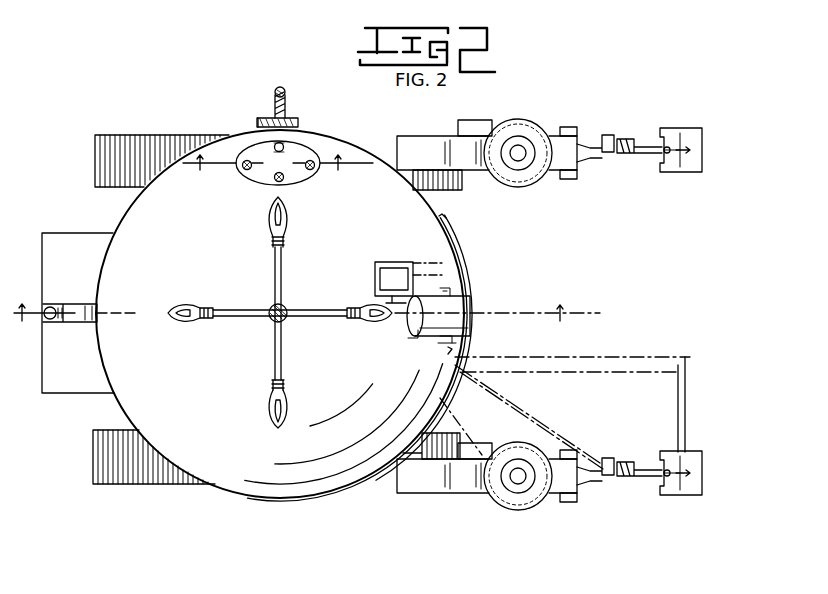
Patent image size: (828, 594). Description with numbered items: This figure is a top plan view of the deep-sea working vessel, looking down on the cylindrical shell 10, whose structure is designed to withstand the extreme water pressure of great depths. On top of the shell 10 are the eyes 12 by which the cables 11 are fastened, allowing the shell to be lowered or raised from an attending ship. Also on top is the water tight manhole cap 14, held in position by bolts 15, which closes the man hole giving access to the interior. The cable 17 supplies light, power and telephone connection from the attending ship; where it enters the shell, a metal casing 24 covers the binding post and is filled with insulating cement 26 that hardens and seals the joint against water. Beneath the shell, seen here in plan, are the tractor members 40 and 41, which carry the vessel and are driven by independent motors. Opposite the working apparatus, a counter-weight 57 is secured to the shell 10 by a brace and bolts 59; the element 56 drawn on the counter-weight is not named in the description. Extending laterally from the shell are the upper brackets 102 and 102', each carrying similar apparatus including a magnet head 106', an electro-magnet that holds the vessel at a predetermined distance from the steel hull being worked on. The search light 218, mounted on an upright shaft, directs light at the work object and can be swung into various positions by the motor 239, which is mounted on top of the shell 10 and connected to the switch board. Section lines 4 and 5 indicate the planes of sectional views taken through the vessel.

The shell 10 is at (240, 470).
The cables 11 is at (275, 285).
The eyes 12 is at (300, 403).
The manhole cap 14 is at (265, 178).
The bolts 15 is at (325, 188).
The cable 17 is at (286, 94).
The metal casing 24 is at (295, 123).
The insulating cement 26 is at (262, 118).
The tractor member 40 is at (143, 138).
The tractor member 41 is at (117, 478).
The slot 56 is at (76, 300).
The counter-weight 57 is at (55, 385).
The bolts 59 is at (56, 318).
The upper bracket 102 is at (529, 482).
The upper bracket 102' is at (529, 137).
The magnet head 106' is at (601, 331).
The search light 218 is at (455, 303).
The motor 239 is at (386, 258).
The section line 4- 4 is at (307, 320).
The section line 5- 5 is at (273, 169).